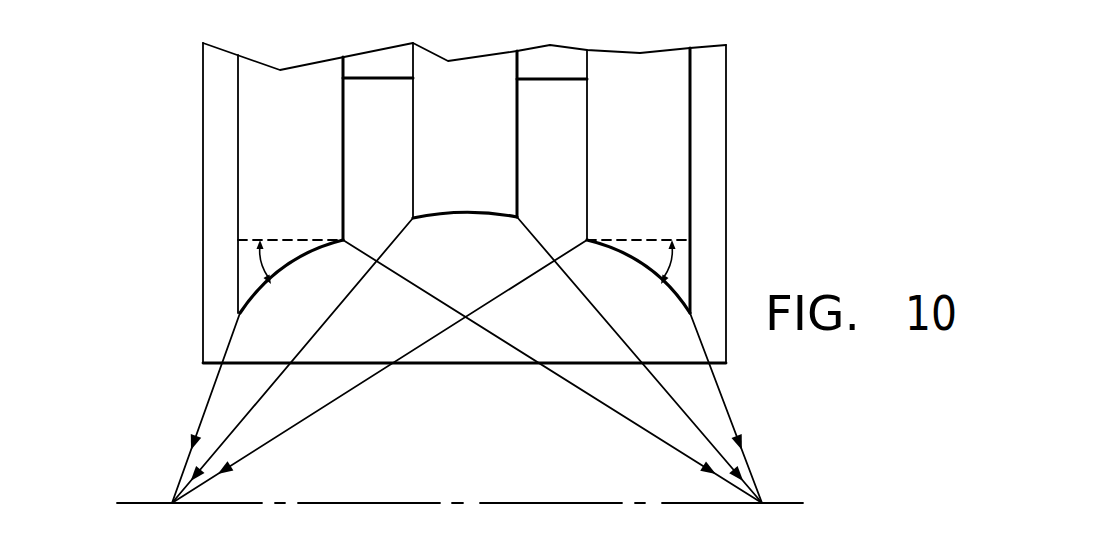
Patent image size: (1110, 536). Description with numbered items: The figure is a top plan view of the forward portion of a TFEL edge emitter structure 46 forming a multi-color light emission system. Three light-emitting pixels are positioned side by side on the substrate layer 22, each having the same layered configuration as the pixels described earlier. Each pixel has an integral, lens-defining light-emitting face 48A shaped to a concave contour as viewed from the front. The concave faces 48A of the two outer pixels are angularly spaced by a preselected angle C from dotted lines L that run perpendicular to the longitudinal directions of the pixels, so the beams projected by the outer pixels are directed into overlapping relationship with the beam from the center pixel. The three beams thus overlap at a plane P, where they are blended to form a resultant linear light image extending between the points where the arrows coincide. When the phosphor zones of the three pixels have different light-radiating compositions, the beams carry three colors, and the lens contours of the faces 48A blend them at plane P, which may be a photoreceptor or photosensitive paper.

The TFEL edge emitter structure 46 is at (732, 129).
The substrate layer 22 is at (728, 215).
The lens-defining light-emitting face 48A is at (306, 259).
The dotted line L is at (300, 240).
The preselected angle C is at (466, 262).
The plane P is at (540, 503).